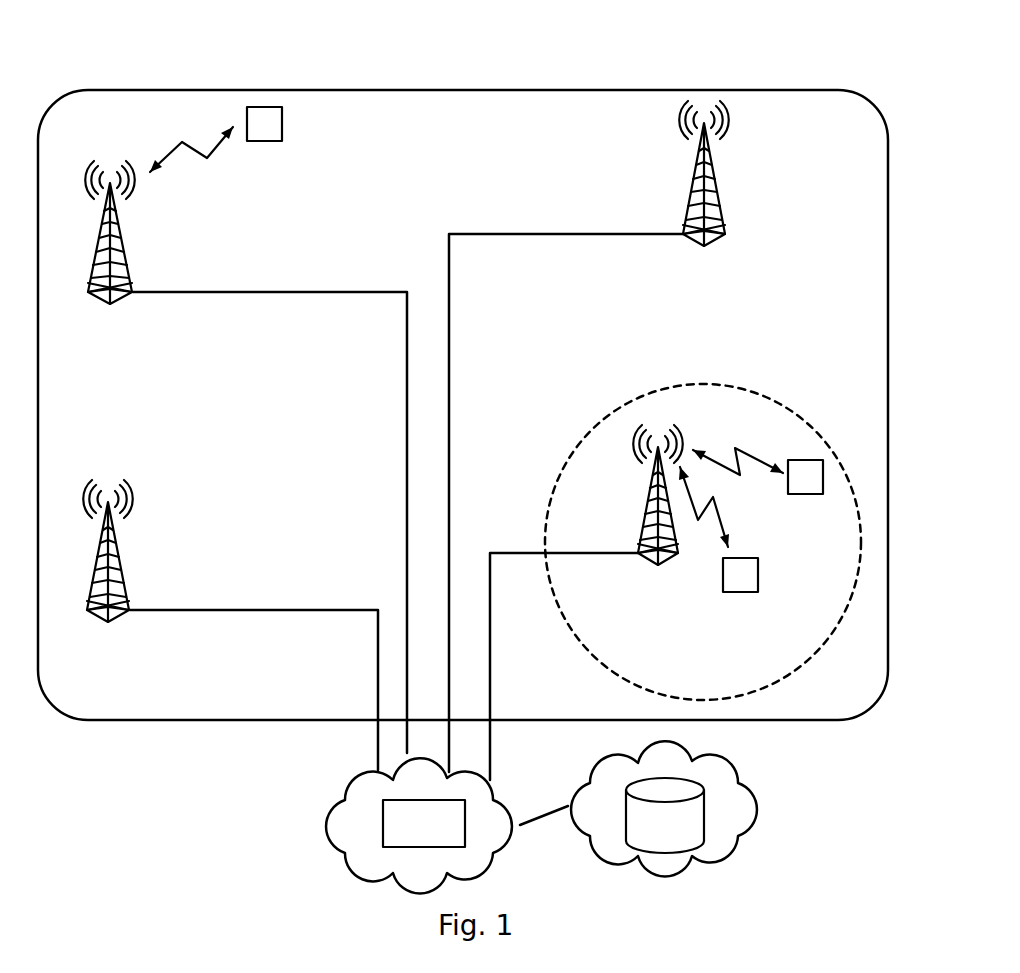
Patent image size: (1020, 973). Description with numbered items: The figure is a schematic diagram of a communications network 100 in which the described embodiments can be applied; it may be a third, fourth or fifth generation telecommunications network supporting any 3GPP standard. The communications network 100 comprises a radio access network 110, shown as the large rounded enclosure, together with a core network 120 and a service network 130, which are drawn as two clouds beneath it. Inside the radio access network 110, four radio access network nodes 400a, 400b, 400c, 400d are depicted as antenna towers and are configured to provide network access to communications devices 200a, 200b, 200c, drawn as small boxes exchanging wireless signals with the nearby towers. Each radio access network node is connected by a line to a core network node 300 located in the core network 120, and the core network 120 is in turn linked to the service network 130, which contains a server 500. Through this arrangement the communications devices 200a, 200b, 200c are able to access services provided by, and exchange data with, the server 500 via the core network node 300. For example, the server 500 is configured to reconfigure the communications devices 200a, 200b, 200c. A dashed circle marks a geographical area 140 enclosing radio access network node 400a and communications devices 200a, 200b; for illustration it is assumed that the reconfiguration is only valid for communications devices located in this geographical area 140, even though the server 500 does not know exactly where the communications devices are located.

The communications network 100 is at (708, 52).
The radio access network 110 is at (463, 405).
The core network 120 is at (371, 825).
The service network 130 is at (724, 808).
The geographical area 140 is at (700, 383).
The communications device 200a is at (740, 592).
The communications device 200b is at (805, 495).
The communications device 200c is at (265, 141).
The core network node 300 is at (424, 823).
The radio access network node 400a is at (658, 566).
The radio access network node 400b is at (127, 574).
The radio access network node 400c is at (123, 241).
The radio access network node 400d is at (718, 194).
The server 500 is at (665, 815).